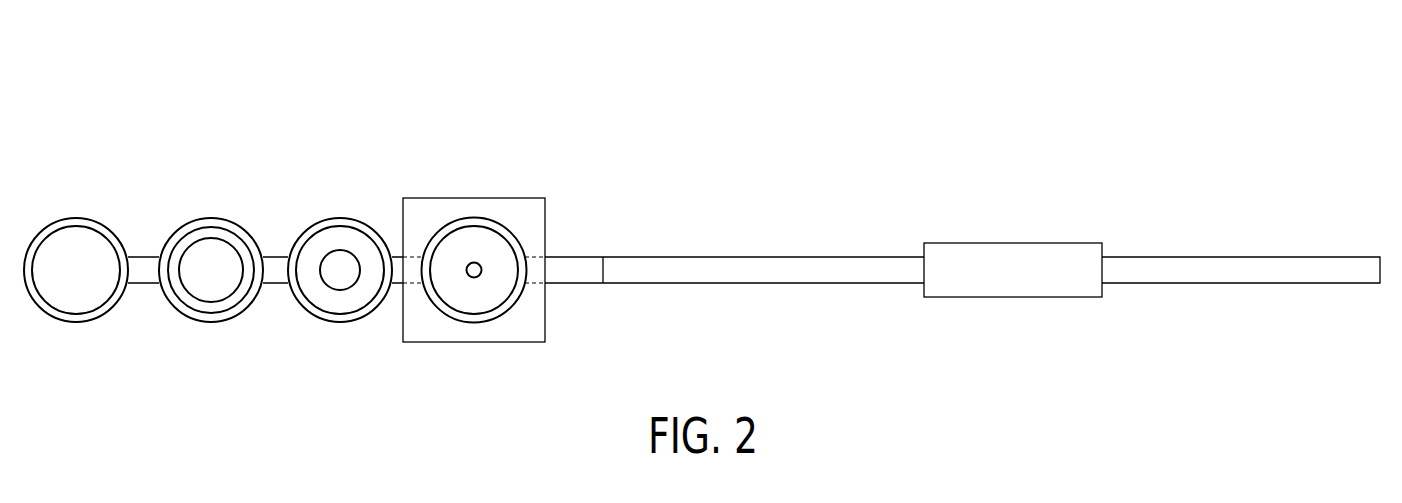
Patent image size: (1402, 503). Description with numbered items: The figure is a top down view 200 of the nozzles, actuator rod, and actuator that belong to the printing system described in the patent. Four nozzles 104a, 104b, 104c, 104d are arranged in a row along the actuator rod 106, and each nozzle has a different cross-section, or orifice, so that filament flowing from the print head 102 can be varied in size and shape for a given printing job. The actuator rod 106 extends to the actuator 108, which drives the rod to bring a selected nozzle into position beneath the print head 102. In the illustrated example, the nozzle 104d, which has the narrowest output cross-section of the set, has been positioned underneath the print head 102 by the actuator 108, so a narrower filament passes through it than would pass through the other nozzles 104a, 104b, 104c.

The top down view 200 is at (1113, 95).
The print head 102 is at (533, 220).
The nozzle 104a is at (78, 223).
The nozzle 104b is at (217, 223).
The nozzle 104c is at (345, 225).
The nozzle 104d is at (472, 243).
The actuator rod 106 is at (732, 272).
The actuator 108 is at (1003, 272).